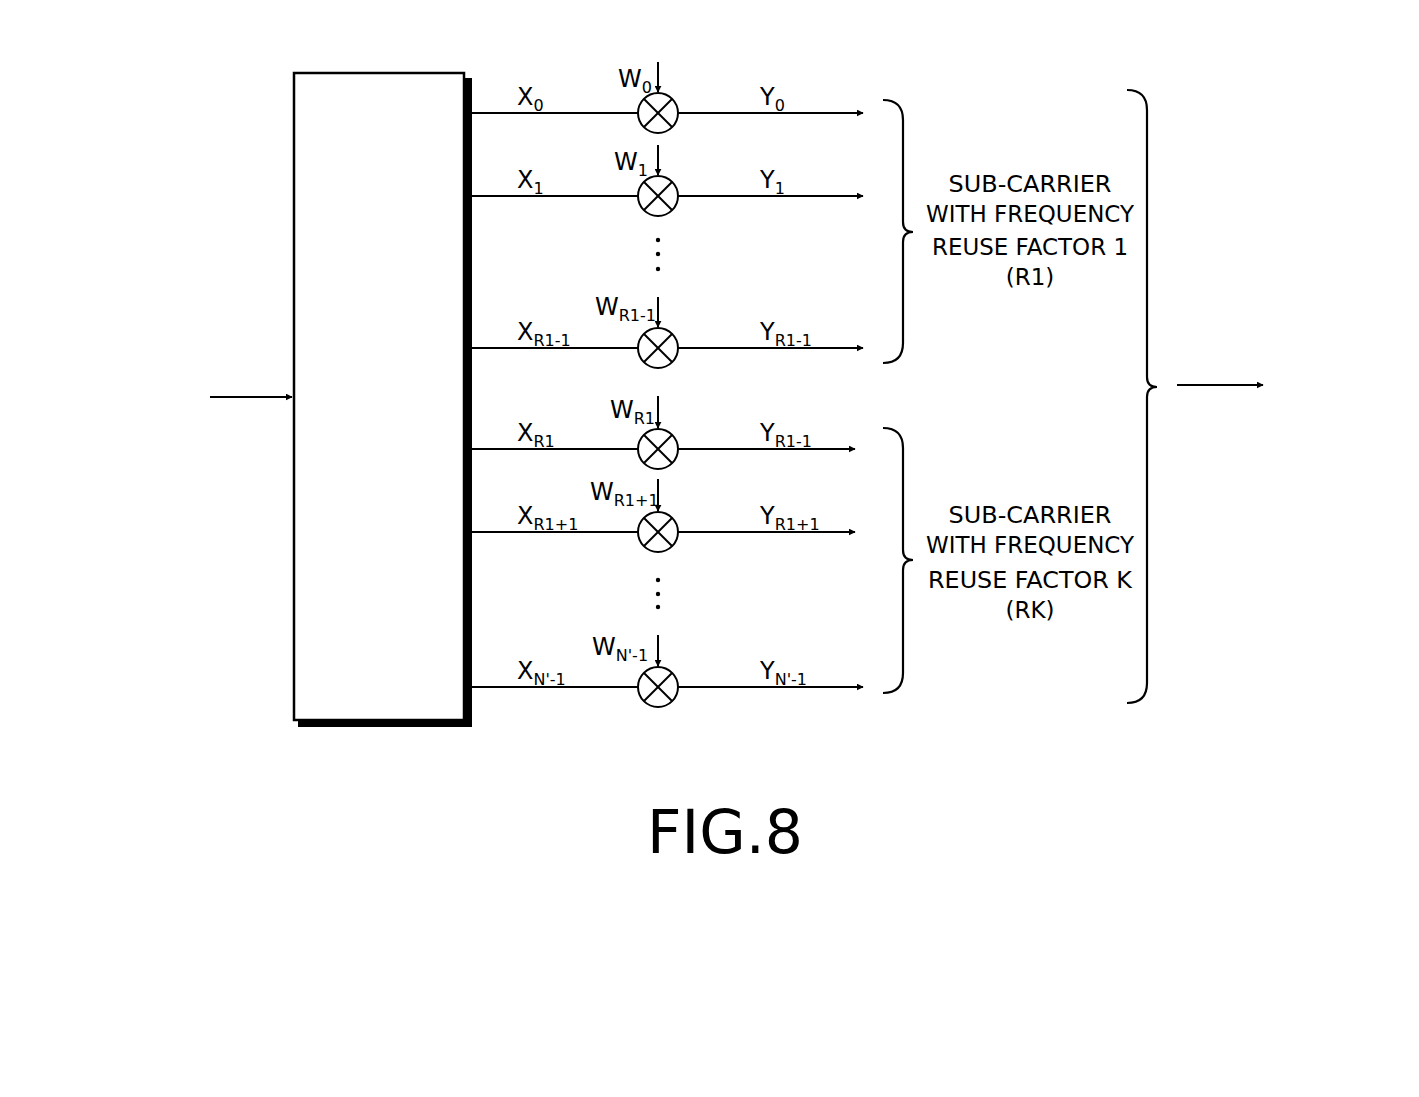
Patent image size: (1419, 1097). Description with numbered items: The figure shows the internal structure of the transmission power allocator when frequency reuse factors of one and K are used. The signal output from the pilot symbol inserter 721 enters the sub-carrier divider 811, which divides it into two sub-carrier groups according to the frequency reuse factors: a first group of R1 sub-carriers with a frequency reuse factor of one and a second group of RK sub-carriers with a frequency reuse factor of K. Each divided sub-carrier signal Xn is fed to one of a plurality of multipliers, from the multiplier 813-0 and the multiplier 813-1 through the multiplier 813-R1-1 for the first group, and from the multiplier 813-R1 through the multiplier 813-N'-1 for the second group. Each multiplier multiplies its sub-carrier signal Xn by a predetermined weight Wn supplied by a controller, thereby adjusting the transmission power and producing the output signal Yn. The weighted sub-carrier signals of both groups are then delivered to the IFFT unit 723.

The pilot symbol inserter 721 is at (139, 397).
The sub-carrier divider 811 is at (380, 73).
The multiplier 813-0 is at (672, 127).
The multiplier 813-1 is at (672, 210).
The multiplier 813-R1-1 is at (672, 362).
The multiplier 813-R1 is at (672, 463).
The multiplier 813-N'-1 is at (721, 680).
The IFFT unit 723 is at (1293, 389).